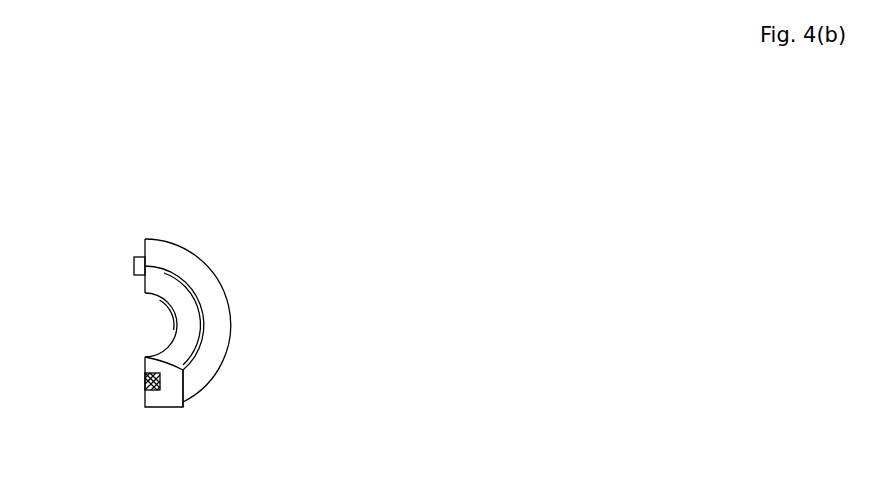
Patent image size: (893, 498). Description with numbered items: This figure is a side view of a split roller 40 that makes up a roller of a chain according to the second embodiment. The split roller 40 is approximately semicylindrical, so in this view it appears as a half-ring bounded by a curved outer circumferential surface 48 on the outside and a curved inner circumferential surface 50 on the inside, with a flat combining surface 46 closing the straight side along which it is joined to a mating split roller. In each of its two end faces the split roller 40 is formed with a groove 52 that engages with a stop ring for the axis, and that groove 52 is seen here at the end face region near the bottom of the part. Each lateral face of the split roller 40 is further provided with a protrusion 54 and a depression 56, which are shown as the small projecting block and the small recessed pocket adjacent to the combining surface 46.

The split roller 40 is at (178, 158).
The combining surface 46 is at (147, 400).
The outer circumferential surface 48 is at (217, 277).
The inner circumferential surface 50 is at (172, 341).
The groove 52 is at (183, 400).
The protrusion 54 is at (133, 263).
The depression 56 is at (146, 388).